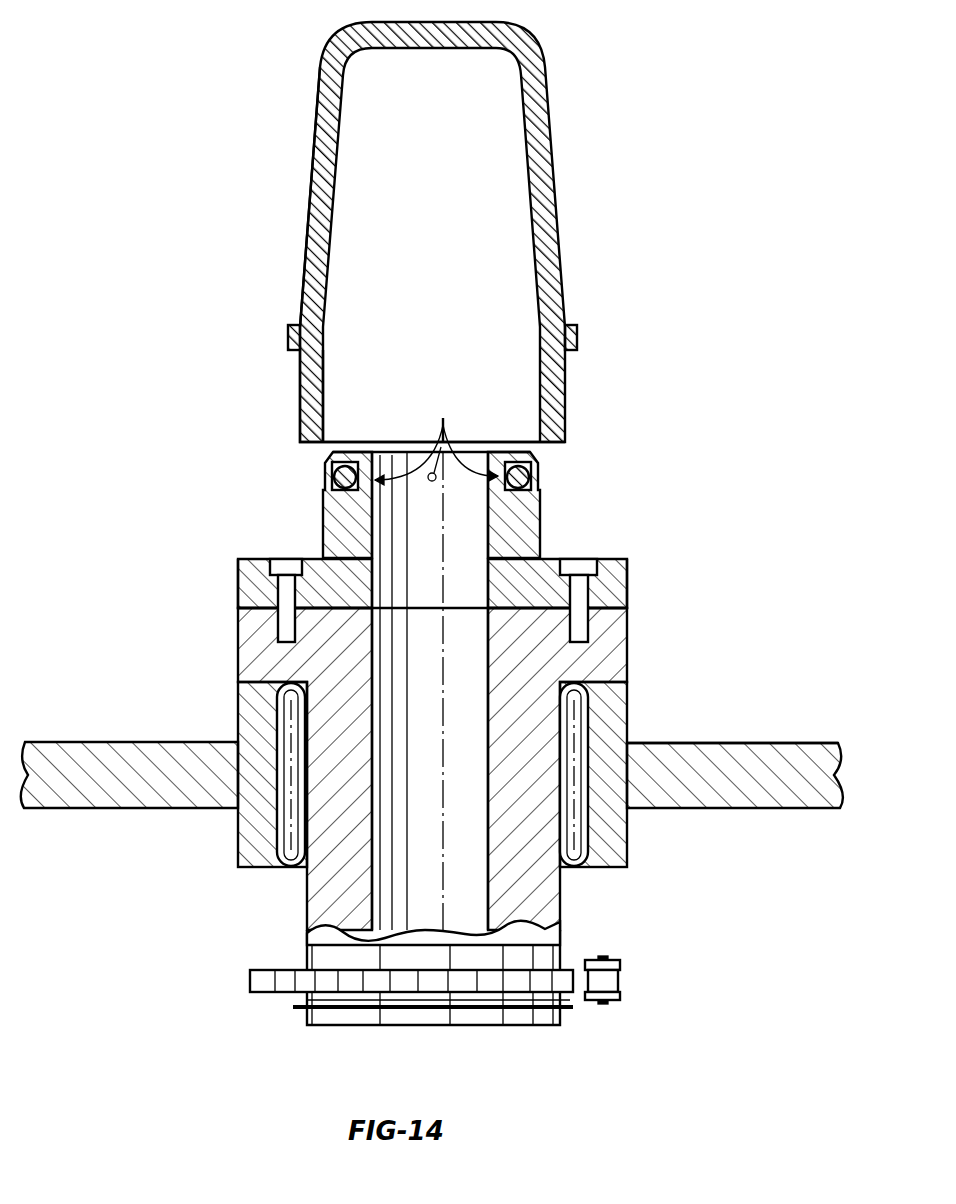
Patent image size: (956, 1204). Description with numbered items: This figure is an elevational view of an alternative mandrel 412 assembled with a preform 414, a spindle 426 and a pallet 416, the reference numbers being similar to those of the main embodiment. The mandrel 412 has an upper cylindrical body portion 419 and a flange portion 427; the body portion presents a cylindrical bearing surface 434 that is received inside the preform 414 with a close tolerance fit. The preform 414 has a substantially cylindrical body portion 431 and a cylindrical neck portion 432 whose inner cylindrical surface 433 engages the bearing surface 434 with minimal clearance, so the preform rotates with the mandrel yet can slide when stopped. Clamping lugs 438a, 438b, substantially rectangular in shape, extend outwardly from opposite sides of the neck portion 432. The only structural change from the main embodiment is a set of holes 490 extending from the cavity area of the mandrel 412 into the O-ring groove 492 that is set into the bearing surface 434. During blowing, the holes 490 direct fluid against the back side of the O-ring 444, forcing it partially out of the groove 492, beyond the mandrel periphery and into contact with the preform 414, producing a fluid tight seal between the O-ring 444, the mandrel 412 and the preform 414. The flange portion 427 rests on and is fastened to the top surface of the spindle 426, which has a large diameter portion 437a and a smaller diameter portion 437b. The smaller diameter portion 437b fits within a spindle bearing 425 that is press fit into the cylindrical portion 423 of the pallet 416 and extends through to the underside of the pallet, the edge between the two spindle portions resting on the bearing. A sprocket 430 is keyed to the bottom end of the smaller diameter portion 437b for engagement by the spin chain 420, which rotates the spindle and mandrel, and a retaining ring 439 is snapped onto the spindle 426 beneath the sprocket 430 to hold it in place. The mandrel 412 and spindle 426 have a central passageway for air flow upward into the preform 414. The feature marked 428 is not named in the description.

The preform 414 is at (553, 203).
The body portion 431 is at (310, 232).
The neck portion 432 is at (300, 395).
The inner cylindrical surface 433 is at (326, 400).
The clamping lug 438a is at (288, 333).
The clamping lug 438b is at (578, 338).
The cylindrical bearing surface 434 is at (542, 535).
The upper cylindrical body portion 419 is at (542, 510).
The O-ring groove 492 is at (337, 486).
The O-ring 444 is at (542, 470).
The holes 490 is at (436, 436).
The flange portion 427 is at (617, 588).
The spindle 426 is at (237, 655).
The large diameter portion 437a is at (627, 642).
The smaller diameter portion 437b is at (563, 880).
The mandrel 412 is at (238, 585).
The cylindrical portion 423 is at (237, 713).
The spindle bearing 425 is at (580, 832).
The pallet 416 is at (782, 795).
The plate upper surface 428 is at (706, 745).
The retaining ring 439 is at (293, 1010).
The spin chain 420 is at (608, 962).
The sprocket 430 is at (577, 988).